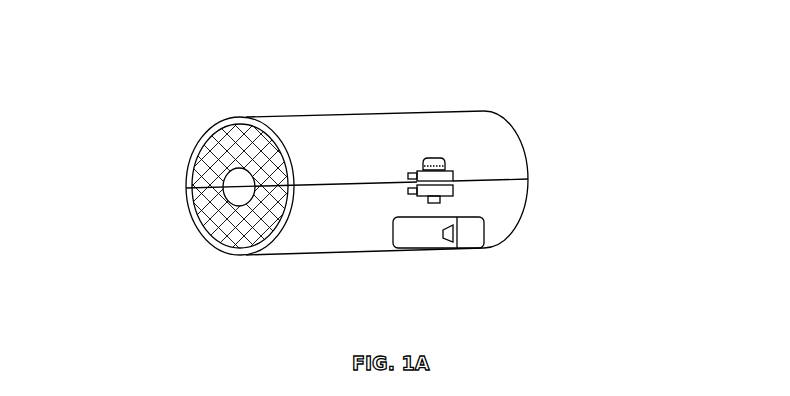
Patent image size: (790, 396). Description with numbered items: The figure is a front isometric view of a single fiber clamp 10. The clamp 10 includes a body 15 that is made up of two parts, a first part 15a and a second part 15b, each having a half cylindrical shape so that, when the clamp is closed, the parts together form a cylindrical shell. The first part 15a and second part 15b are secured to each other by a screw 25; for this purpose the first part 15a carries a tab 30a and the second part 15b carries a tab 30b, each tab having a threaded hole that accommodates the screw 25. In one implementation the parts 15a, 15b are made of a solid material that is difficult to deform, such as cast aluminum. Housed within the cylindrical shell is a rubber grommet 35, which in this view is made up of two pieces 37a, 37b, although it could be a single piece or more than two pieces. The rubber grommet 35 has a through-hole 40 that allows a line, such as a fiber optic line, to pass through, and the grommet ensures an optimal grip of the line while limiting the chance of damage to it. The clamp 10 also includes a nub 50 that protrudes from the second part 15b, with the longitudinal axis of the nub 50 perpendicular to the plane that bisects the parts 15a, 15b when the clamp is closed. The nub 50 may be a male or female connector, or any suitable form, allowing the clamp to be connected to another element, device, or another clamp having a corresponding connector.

The single fiber clamp 10 is at (348, 185).
The body 15 is at (400, 155).
The first part 15a is at (520, 133).
The second part 15b is at (518, 222).
The screw 25 is at (433, 157).
The tab 30a is at (453, 176).
The tab 30b is at (453, 192).
The rubber grommet 35 is at (243, 141).
The piece 37a is at (205, 166).
The piece 37b is at (220, 222).
The through-hole 40 is at (230, 167).
The nub 50 is at (405, 235).